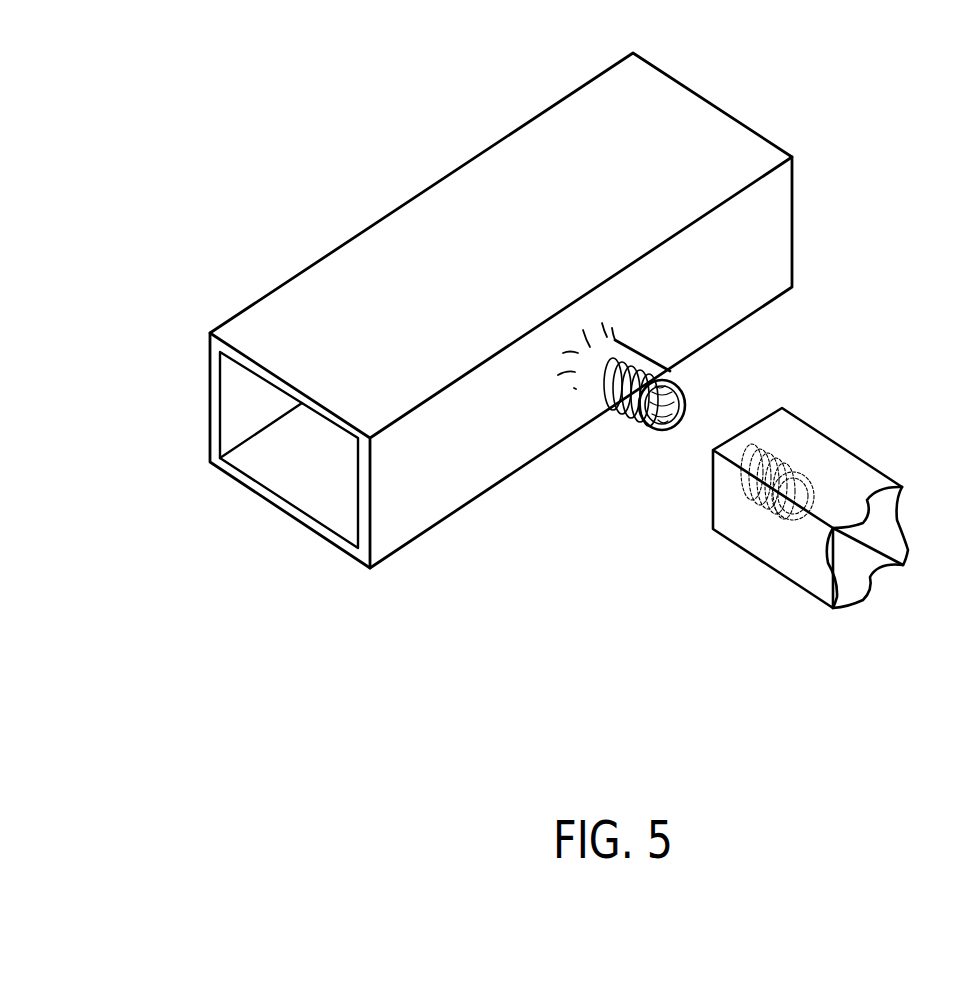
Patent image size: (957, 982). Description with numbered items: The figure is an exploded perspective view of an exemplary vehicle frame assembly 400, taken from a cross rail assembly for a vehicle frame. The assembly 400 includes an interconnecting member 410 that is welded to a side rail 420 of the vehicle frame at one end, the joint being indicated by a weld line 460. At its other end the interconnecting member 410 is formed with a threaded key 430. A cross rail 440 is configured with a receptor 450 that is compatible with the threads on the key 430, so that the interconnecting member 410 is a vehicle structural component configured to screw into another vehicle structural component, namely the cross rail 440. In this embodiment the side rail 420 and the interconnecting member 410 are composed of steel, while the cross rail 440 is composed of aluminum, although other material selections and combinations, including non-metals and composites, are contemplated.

The vehicle frame assembly 400 is at (127, 715).
The interconnecting member 410 is at (598, 378).
The side rail 420 is at (422, 210).
The threaded key 430 is at (640, 421).
The cross rail 440 is at (840, 462).
The receptor 450 is at (757, 508).
The weld line 460 is at (595, 333).